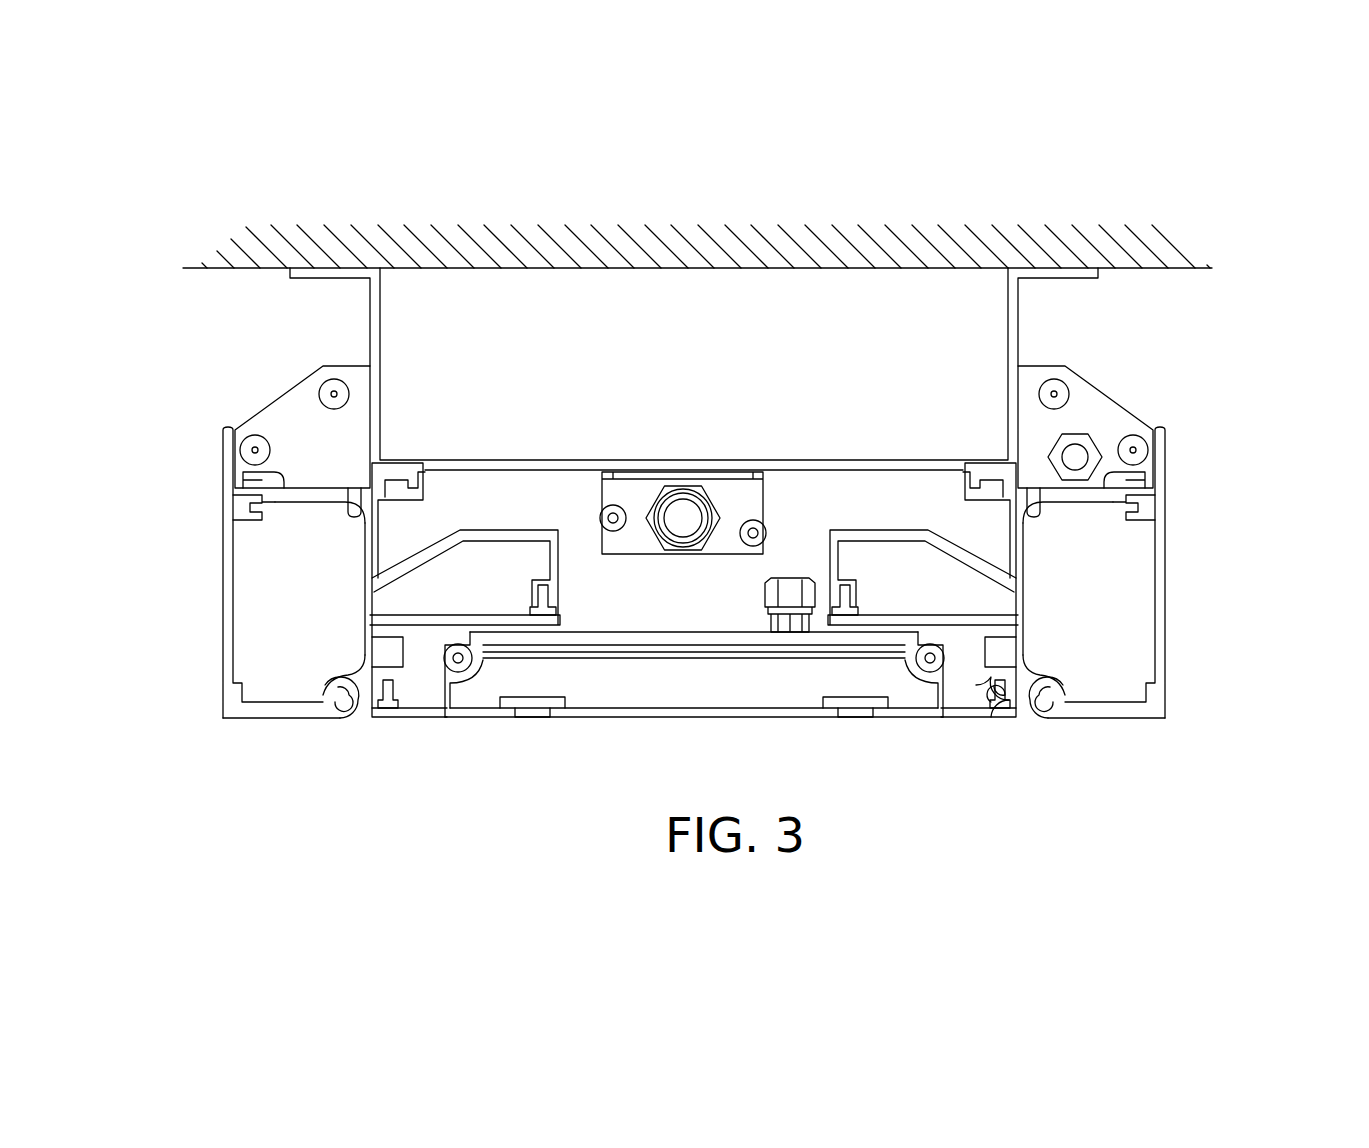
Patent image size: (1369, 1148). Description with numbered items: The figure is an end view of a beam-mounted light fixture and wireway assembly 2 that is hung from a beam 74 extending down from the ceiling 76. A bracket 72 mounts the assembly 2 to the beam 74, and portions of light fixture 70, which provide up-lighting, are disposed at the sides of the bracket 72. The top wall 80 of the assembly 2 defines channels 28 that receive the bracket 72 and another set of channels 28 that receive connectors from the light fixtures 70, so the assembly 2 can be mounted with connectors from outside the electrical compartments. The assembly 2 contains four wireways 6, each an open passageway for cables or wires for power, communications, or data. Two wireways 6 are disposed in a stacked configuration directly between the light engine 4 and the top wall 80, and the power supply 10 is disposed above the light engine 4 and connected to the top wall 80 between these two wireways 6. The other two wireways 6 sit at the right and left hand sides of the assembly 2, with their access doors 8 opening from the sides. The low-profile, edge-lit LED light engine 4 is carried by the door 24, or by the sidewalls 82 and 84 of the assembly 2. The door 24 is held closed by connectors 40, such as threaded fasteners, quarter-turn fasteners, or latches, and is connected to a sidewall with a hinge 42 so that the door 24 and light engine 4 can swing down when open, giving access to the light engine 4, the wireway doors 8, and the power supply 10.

The light fixture and wireway assembly 2 is at (1245, 243).
The light engine 4 is at (700, 690).
The wireway 6 is at (513, 553).
The access door 8 is at (225, 640).
The power supply 10 is at (638, 486).
The door 24 is at (430, 717).
The channel 28 is at (245, 487).
The connector 40 is at (243, 500).
The hinge 42 is at (336, 693).
The light fixture 70 is at (272, 418).
The bracket 72 is at (1012, 345).
The beam 74 is at (808, 377).
The ceiling 76 is at (820, 228).
The top wall 80 is at (848, 455).
The sidewall 82 is at (363, 645).
The sidewall 84 is at (1023, 640).